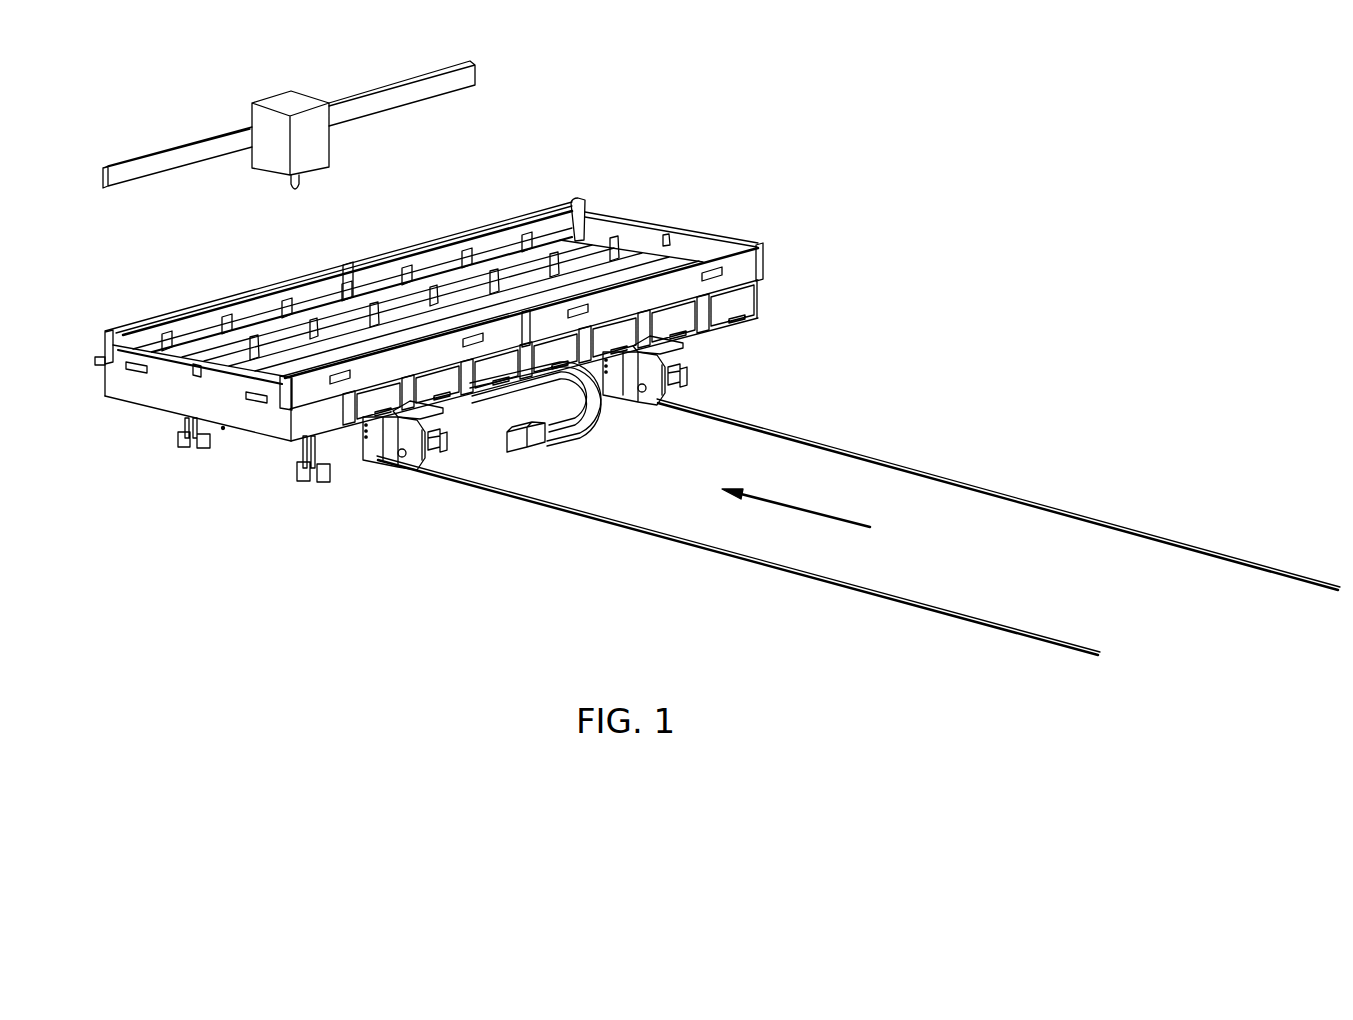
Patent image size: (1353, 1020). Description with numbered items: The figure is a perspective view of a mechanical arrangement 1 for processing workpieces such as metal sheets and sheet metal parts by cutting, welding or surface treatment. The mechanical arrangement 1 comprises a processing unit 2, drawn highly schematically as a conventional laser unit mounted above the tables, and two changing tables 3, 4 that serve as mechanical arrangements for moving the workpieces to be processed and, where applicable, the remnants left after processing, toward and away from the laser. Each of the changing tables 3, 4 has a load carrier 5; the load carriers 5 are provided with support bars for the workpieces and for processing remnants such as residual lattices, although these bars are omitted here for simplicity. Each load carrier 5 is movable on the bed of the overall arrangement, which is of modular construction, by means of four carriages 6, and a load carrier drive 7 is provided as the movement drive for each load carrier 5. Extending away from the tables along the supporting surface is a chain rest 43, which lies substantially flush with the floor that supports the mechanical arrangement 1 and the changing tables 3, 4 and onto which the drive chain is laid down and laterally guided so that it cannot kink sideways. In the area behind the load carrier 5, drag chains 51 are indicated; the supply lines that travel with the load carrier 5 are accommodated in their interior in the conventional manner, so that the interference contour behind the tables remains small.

The mechanical arrangement 1 is at (660, 75).
The processing unit 2 is at (319, 151).
The changing table 3 is at (655, 200).
The changing table 4 is at (156, 293).
The load carrier 5 is at (94, 382).
The carriage 6 is at (193, 448).
The load carrier drive 7 is at (704, 378).
The chain rest 43 is at (984, 474).
The drag chain 51 is at (594, 418).